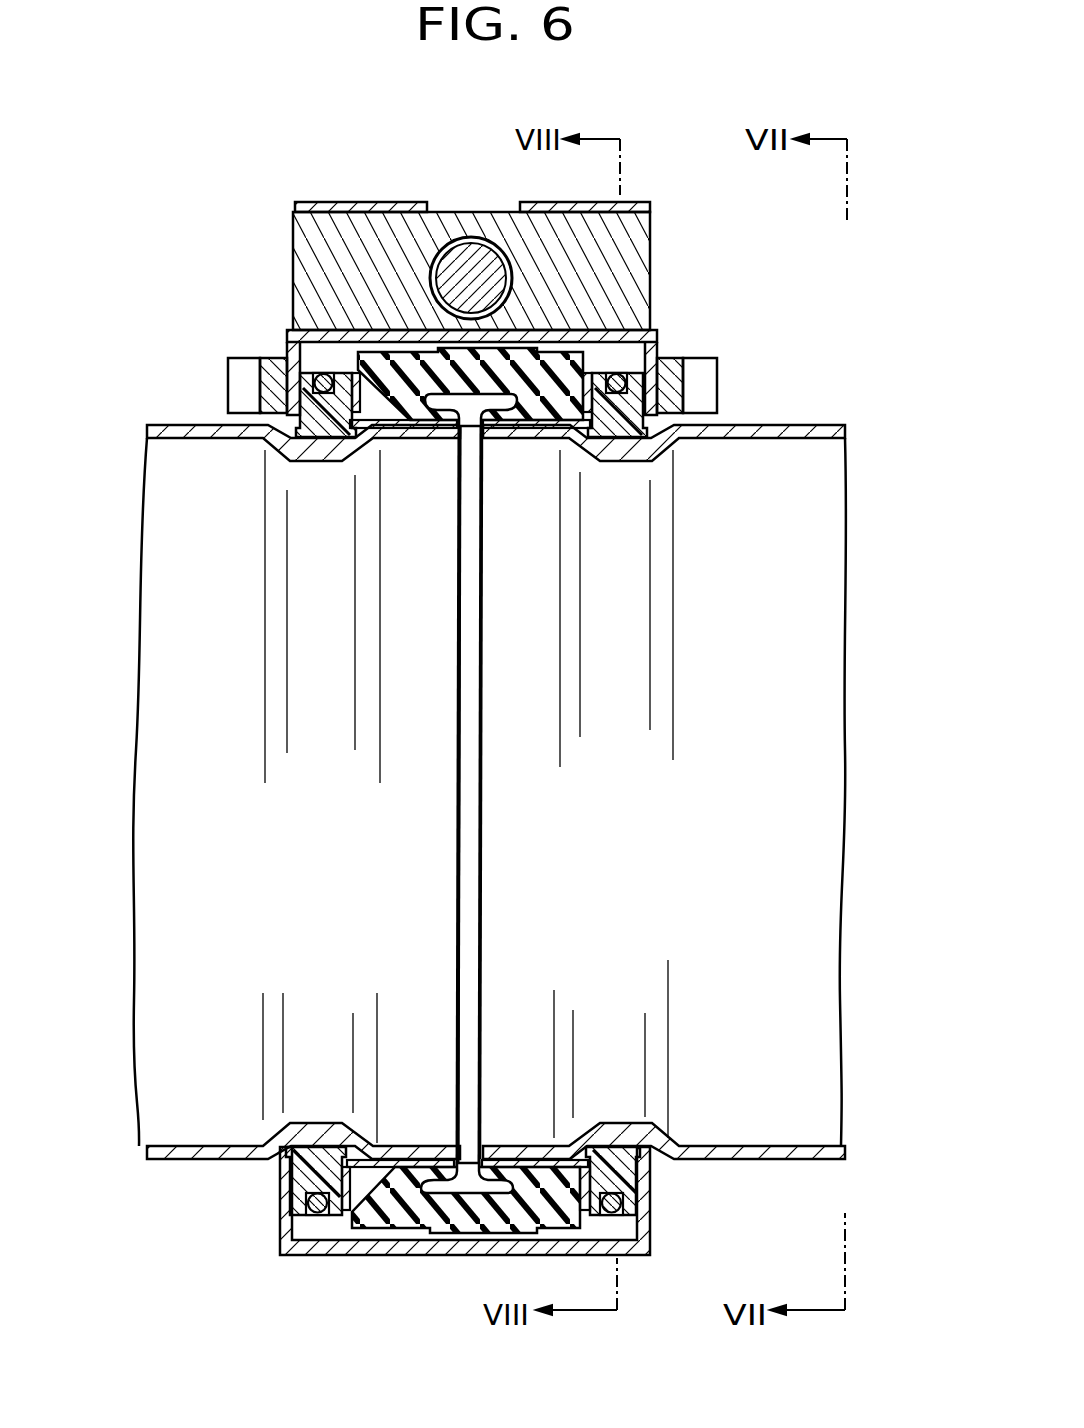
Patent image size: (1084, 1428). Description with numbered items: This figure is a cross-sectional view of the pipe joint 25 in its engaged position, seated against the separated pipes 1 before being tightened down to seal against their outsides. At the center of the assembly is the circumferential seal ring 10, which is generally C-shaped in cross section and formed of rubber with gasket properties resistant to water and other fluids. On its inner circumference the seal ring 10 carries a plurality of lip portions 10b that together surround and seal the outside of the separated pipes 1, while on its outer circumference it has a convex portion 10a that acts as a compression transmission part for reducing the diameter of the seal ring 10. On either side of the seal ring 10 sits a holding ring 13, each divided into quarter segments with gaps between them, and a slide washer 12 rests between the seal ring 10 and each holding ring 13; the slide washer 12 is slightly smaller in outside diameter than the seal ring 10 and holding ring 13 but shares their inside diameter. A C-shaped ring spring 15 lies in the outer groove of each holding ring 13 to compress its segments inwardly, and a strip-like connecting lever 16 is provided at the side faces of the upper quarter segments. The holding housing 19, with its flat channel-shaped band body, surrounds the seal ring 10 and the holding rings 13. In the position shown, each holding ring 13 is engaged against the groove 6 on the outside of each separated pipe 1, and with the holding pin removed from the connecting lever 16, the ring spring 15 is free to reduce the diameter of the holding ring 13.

The separated pipe 1 is at (173, 430).
The groove 6 is at (330, 450).
The seal ring 10 is at (467, 695).
The convex portion 10a is at (443, 350).
The lip portion 10b is at (427, 430).
The slide washer 12 is at (476, 706).
The holding ring 13 is at (312, 432).
The ring spring 15 is at (320, 373).
The connecting lever 16 is at (230, 387).
The holding housing 19 is at (370, 333).
The pipe joint 25 is at (475, 706).